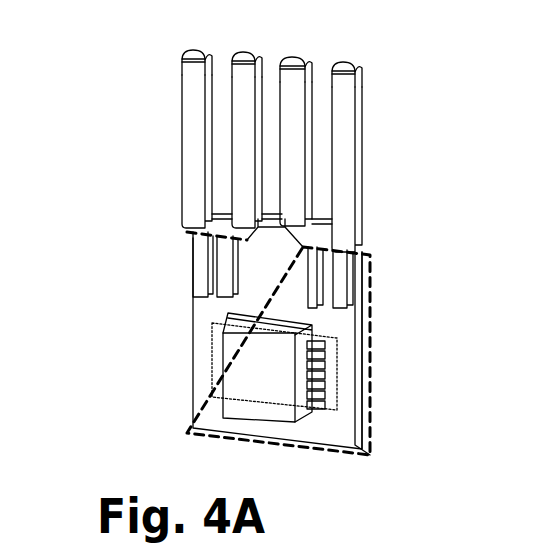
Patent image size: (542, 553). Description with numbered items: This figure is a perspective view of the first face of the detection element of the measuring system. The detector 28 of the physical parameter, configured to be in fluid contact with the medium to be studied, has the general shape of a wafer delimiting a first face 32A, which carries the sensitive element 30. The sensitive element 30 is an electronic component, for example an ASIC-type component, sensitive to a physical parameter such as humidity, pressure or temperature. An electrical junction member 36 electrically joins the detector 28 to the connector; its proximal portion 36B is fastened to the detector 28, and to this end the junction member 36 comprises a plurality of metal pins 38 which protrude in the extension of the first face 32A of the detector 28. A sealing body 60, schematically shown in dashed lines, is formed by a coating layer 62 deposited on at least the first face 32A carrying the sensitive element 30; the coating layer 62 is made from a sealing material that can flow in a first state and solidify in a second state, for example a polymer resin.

The detector 28 is at (130, 200).
The sensitive element 30 is at (272, 377).
The first face 32A is at (200, 377).
The electrical junction member 36 is at (362, 180).
The proximal portion 36B is at (315, 276).
The metal pins 38 is at (258, 112).
The sealing body 60 is at (185, 307).
The coating layer 62 is at (365, 358).